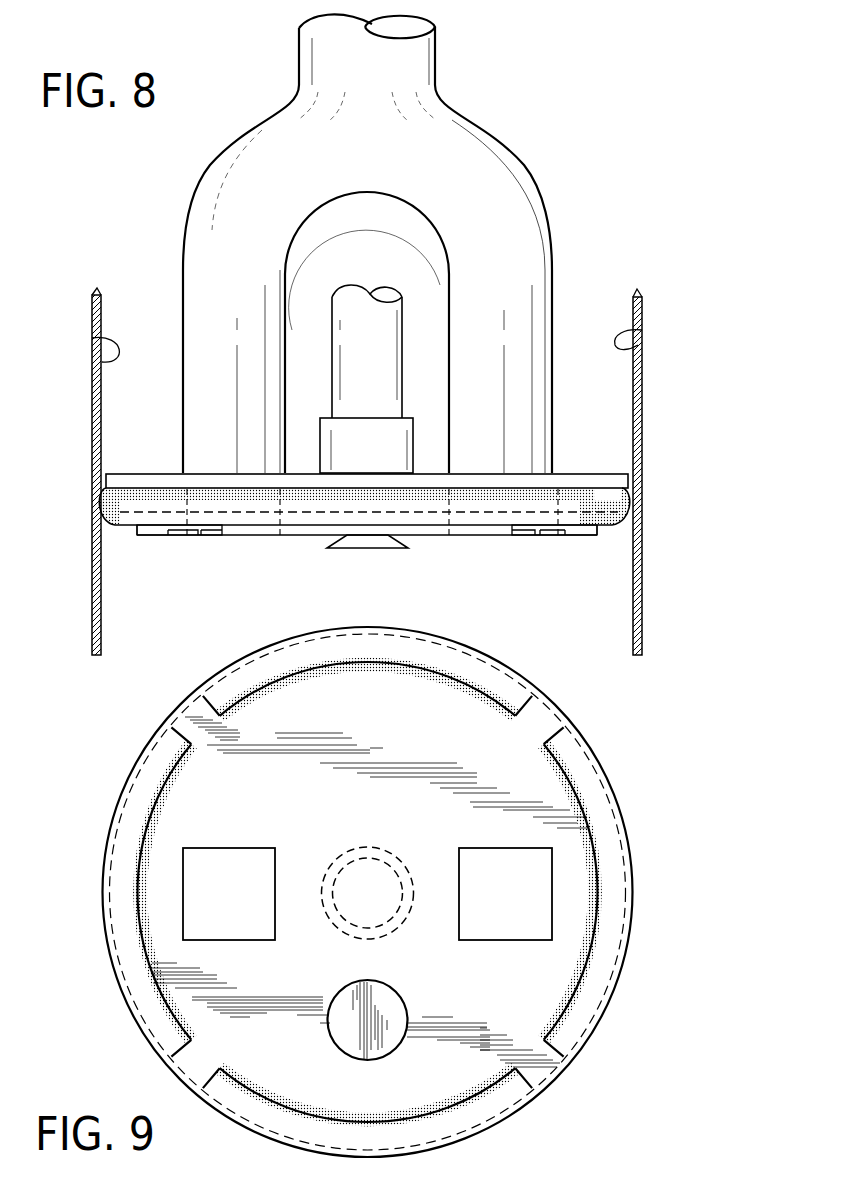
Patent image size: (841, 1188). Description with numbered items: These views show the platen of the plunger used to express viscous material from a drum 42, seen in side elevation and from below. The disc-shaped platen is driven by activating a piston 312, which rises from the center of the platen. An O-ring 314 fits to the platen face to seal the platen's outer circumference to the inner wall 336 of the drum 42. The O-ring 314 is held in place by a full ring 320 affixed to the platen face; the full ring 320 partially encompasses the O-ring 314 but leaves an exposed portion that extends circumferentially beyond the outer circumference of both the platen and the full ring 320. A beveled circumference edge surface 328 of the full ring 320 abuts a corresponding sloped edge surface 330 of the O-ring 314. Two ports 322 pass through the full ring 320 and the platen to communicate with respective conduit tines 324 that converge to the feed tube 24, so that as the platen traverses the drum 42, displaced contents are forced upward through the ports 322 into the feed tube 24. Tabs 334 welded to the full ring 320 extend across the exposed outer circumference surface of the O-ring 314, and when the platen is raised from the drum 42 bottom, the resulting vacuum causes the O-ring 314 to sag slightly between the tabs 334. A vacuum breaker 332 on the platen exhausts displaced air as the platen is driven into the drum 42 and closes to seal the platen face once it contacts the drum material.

In FIG. 8, the feed tube 24 is at (420, 60).
In FIG. 8, the drum 42 is at (92, 395).
In FIG. 8, the piston 312 is at (352, 296).
In FIG. 9, the piston 312 is at (360, 875).
In FIG. 8, the O-ring 314 is at (630, 490).
In FIG. 9, the O-ring 314 is at (593, 993).
In FIG. 8, the full ring 320 is at (303, 537).
In FIG. 9, the full ring 320 is at (555, 780).
In FIG. 8, the ports 322 is at (243, 537).
In FIG. 9, the ports 322 is at (197, 897).
In FIG. 8, the conduit tines 324 is at (197, 233).
In FIG. 8, the beveled circumference edge surface 328 is at (152, 523).
In FIG. 8, the sloped edge surface 330 is at (160, 537).
In FIG. 8, the vacuum breaker 332 is at (365, 548).
In FIG. 9, the vacuum breaker 332 is at (392, 1000).
In FIG. 8, the tabs 334 is at (195, 537).
In FIG. 9, the tabs 334 is at (190, 726).
In FIG. 8, the inner wall 336 is at (92, 338).